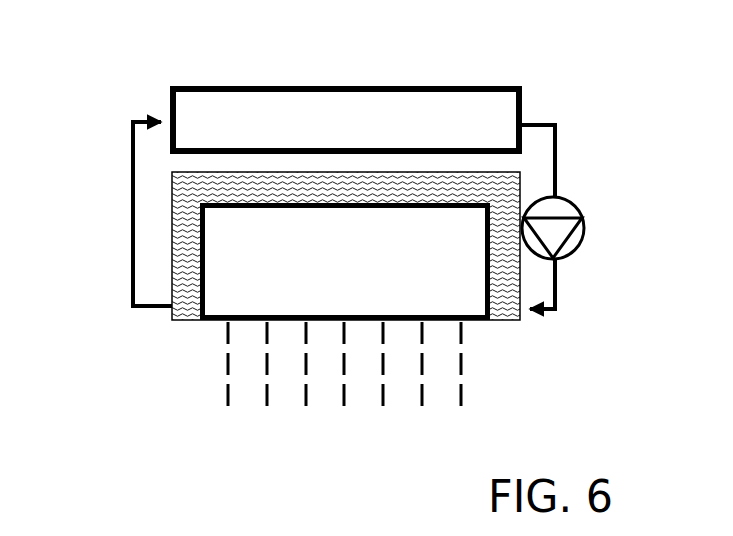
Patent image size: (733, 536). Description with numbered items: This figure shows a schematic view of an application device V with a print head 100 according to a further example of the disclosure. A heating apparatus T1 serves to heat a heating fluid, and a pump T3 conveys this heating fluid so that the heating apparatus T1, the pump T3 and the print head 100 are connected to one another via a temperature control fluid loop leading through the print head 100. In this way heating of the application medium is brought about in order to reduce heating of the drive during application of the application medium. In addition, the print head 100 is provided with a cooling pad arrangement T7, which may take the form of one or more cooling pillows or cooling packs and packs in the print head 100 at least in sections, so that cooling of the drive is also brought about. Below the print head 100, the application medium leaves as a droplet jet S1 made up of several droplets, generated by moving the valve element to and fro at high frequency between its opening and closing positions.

The application device V is at (84, 114).
The heating apparatus T1 is at (287, 86).
The cooling pad arrangement T7 is at (193, 215).
The print head 100 is at (378, 259).
The pump T3 is at (583, 217).
The droplet jet S1 is at (463, 363).